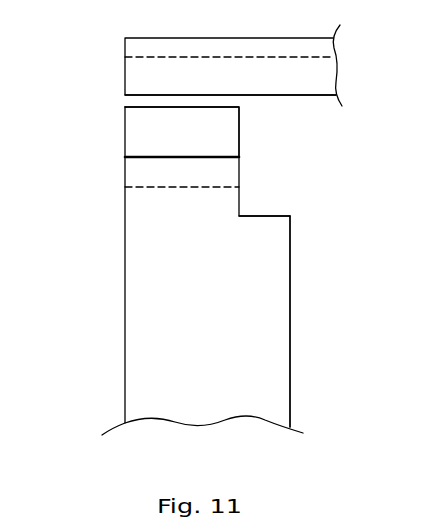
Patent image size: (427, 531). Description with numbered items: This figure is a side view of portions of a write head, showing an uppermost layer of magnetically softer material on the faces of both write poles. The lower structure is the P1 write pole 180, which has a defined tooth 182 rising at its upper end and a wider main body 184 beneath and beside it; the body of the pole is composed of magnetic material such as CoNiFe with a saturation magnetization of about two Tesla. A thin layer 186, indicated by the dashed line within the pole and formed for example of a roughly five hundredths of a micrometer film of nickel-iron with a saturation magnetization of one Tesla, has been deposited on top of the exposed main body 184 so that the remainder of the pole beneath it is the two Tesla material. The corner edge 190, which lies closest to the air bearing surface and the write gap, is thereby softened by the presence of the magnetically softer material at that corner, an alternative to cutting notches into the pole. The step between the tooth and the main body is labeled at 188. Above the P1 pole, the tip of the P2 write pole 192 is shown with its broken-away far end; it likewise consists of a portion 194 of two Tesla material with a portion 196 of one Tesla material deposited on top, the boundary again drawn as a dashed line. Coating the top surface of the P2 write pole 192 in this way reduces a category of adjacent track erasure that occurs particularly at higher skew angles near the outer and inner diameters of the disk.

The P1 write pole 180 is at (118, 296).
The tooth 182 is at (218, 142).
The main body 184 is at (255, 283).
The thin layer 186 is at (220, 179).
The step 188 is at (257, 245).
The corner edge 190 is at (125, 157).
The P2 write pole 192 is at (118, 60).
The portion of 2 Tesla material 194 is at (318, 84).
The portion of 1 Tesla material 196 is at (320, 52).